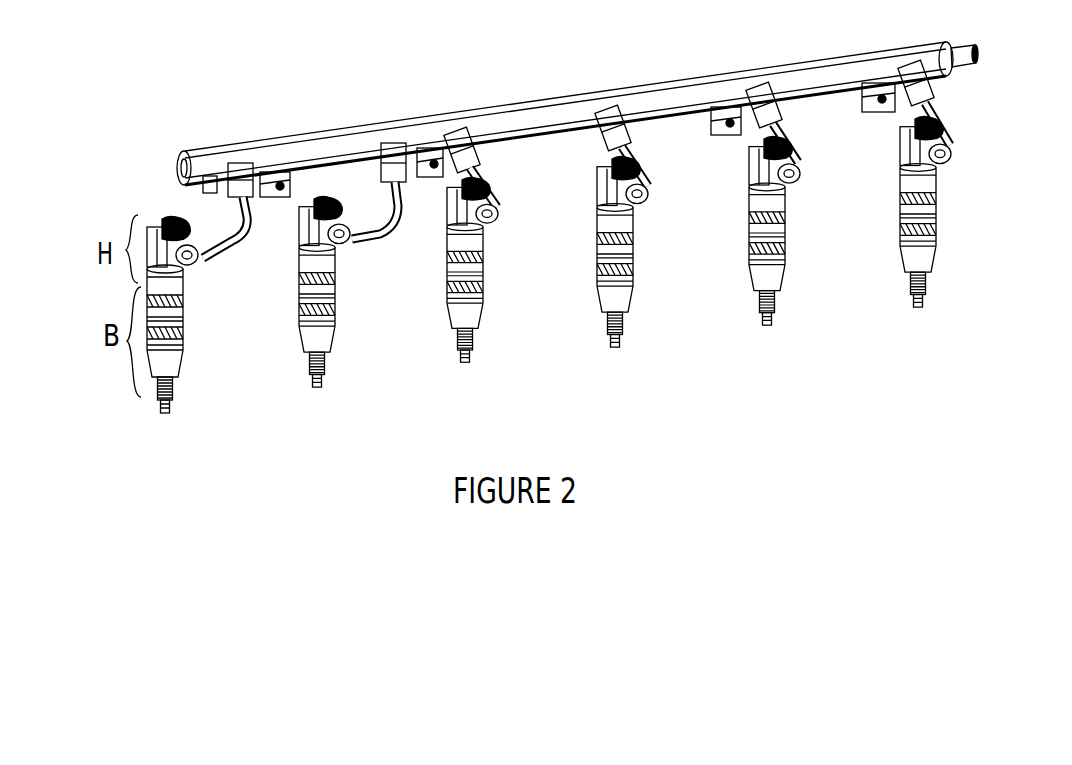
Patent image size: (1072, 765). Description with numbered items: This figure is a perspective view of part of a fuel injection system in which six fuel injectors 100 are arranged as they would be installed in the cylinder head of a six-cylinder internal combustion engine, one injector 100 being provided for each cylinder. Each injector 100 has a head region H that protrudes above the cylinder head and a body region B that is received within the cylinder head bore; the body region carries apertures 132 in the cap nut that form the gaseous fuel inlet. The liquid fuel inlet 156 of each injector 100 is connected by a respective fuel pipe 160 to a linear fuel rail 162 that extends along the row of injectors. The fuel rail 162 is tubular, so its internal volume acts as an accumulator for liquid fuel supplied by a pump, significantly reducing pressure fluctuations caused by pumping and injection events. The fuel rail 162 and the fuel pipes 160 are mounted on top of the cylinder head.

The fuel injector 100 is at (538, 256).
The apertures 132 is at (182, 335).
The liquid fuel inlet 156 is at (192, 272).
The fuel pipe 160 is at (226, 249).
The fuel rail 162 is at (527, 105).